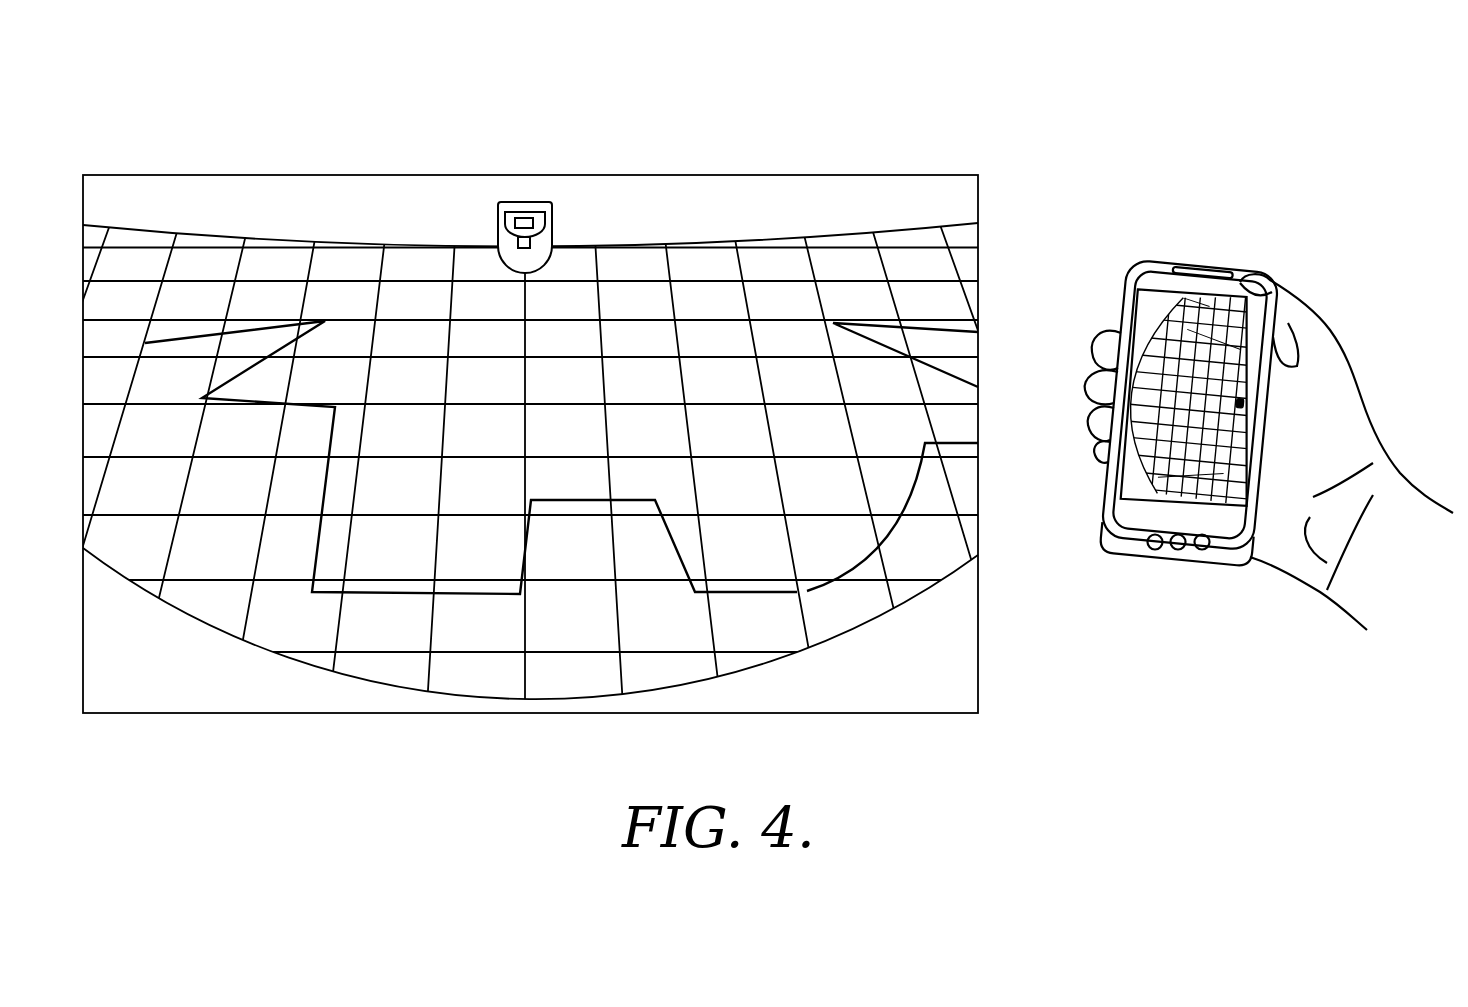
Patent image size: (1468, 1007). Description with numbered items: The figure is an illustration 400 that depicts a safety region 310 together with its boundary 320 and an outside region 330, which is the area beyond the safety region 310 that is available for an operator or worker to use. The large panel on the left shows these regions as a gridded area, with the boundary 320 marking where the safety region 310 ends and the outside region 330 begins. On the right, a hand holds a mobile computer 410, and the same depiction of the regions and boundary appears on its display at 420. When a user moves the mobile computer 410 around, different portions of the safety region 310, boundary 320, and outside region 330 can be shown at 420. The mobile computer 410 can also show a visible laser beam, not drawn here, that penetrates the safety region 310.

The illustration 400 is at (559, 386).
The safety region 310 is at (952, 279).
The boundary 320 is at (907, 480).
The outside region 330 is at (932, 565).
The mobile computer 410 is at (1189, 428).
The display 420 is at (1183, 500).